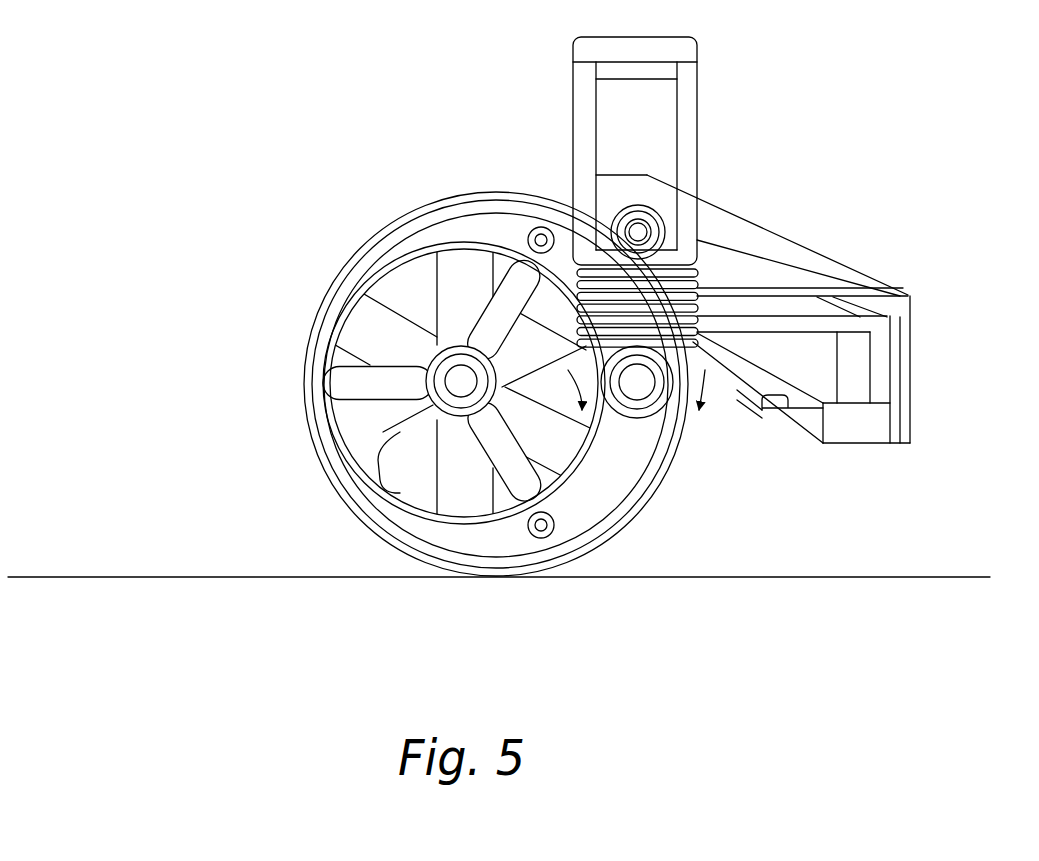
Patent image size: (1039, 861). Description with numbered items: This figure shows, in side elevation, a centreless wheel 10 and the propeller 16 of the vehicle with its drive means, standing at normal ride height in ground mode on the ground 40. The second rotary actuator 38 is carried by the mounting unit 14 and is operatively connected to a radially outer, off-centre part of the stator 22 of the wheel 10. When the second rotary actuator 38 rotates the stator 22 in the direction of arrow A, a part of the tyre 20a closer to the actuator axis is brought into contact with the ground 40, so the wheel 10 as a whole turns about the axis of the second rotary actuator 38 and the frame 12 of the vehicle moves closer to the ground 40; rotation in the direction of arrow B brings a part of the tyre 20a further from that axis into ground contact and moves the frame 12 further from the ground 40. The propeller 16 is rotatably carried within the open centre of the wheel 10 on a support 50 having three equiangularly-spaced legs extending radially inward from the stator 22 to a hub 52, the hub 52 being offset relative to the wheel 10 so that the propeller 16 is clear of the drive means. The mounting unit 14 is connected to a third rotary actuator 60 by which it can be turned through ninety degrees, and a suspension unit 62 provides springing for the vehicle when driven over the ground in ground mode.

The centreless wheel 10 is at (399, 193).
The frame 12 is at (898, 305).
The mounting unit 14 is at (688, 100).
The propeller 16 is at (391, 383).
The tyre 20a is at (345, 270).
The stator 22 is at (573, 529).
The second rotary actuator 38 is at (652, 410).
The ground 40 is at (866, 577).
The support 50 is at (440, 404).
The hub 52 is at (390, 468).
The third rotary actuator 60 is at (645, 233).
The suspension unit 62 is at (660, 310).